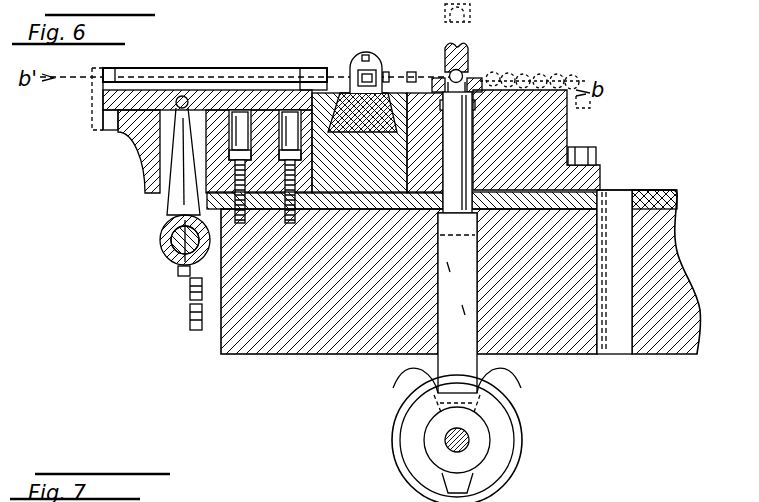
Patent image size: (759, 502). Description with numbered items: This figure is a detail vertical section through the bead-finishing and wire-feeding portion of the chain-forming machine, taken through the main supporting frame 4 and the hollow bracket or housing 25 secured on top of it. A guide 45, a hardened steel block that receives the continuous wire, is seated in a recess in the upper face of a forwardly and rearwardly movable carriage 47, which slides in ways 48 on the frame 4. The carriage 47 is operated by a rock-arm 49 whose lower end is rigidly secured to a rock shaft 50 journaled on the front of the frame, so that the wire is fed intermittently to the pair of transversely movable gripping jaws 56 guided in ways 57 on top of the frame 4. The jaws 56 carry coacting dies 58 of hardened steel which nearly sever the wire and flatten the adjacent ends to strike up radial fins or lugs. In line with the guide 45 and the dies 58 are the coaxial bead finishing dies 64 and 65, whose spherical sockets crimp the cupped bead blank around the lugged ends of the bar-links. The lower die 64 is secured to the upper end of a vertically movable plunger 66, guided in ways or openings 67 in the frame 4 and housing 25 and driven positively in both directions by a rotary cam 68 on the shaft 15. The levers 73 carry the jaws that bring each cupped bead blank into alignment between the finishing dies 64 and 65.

The main supporting frame 4 is at (272, 343).
The shaft 15 is at (445, 442).
The hollow bracket or housing 25 is at (553, 138).
The guide 45 is at (244, 70).
The carriage 47 is at (104, 101).
The ways 48 is at (130, 140).
The rock-arm 49 is at (175, 200).
The rock shaft 50 is at (167, 249).
The gripping jaws 56 is at (355, 100).
The ways 57 is at (330, 105).
The coacting dies 58 is at (369, 63).
The bead finishing die 64 is at (499, 88).
The bead finishing die 65 is at (468, 54).
The plunger 66 is at (457, 242).
The ways or openings 67 is at (485, 343).
The rotary cam 68 is at (503, 443).
The levers 73 is at (437, 88).